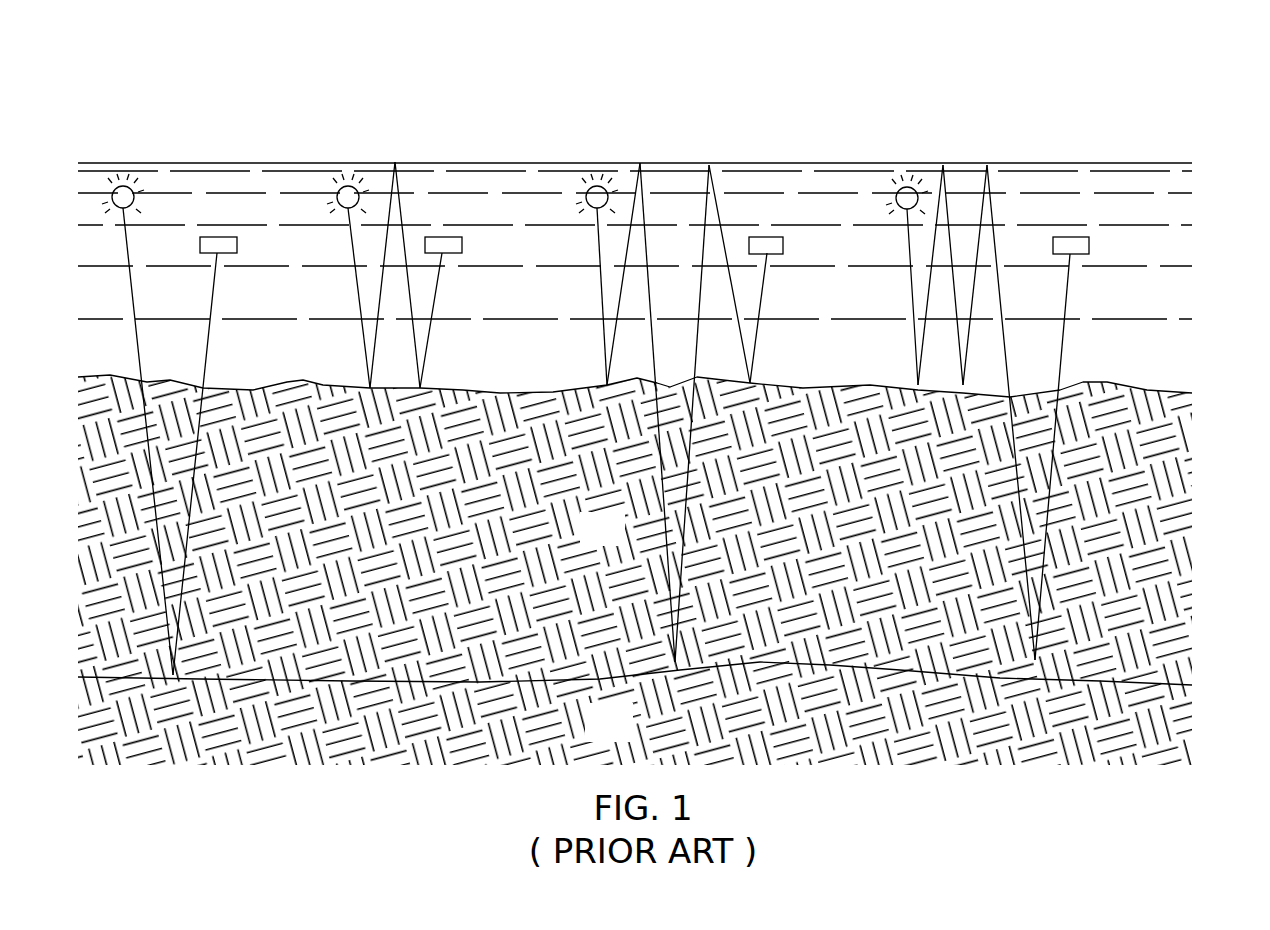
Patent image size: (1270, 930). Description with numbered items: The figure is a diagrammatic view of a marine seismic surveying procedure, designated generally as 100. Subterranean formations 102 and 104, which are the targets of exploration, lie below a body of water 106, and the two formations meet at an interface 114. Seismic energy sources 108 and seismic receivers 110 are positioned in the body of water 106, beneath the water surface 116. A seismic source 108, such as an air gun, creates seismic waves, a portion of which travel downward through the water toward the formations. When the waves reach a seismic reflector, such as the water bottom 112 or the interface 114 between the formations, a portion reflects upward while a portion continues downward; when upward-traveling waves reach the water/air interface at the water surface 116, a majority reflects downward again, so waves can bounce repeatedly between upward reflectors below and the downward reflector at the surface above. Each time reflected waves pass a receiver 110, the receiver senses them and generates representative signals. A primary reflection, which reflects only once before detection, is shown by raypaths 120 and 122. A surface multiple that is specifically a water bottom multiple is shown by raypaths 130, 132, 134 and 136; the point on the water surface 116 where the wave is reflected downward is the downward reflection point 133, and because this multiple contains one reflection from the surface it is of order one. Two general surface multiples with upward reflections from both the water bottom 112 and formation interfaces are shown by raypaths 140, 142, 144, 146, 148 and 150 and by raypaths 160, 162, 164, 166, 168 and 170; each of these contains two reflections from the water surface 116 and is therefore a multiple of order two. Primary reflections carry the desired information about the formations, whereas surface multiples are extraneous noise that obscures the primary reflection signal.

The marine seismic surveying procedure 100 is at (247, 124).
The subterranean formation 102 is at (585, 542).
The subterranean formation 104 is at (591, 737).
The body of water 106 is at (297, 363).
The seismic energy source 108 is at (126, 186).
The seismic receiver 110 is at (238, 244).
The water bottom 112 is at (1160, 395).
The interface 114 is at (1160, 683).
The water surface 116 is at (1165, 163).
The raypath 120 is at (133, 298).
The raypath 122 is at (212, 298).
The raypath 130 is at (359, 295).
The raypath 132 is at (379, 308).
The downward reflection point 133 is at (395, 162).
The raypath 134 is at (402, 205).
The raypath 136 is at (436, 308).
The raypath 140 is at (601, 295).
The raypath 142 is at (620, 300).
The raypath 144 is at (648, 251).
The raypath 146 is at (700, 325).
The raypath 148 is at (714, 188).
The raypath 150 is at (758, 323).
The raypath 160 is at (910, 282).
The raypath 162 is at (927, 312).
The raypath 164 is at (959, 348).
The raypath 166 is at (970, 337).
The raypath 168 is at (1001, 298).
The raypath 170 is at (1063, 366).